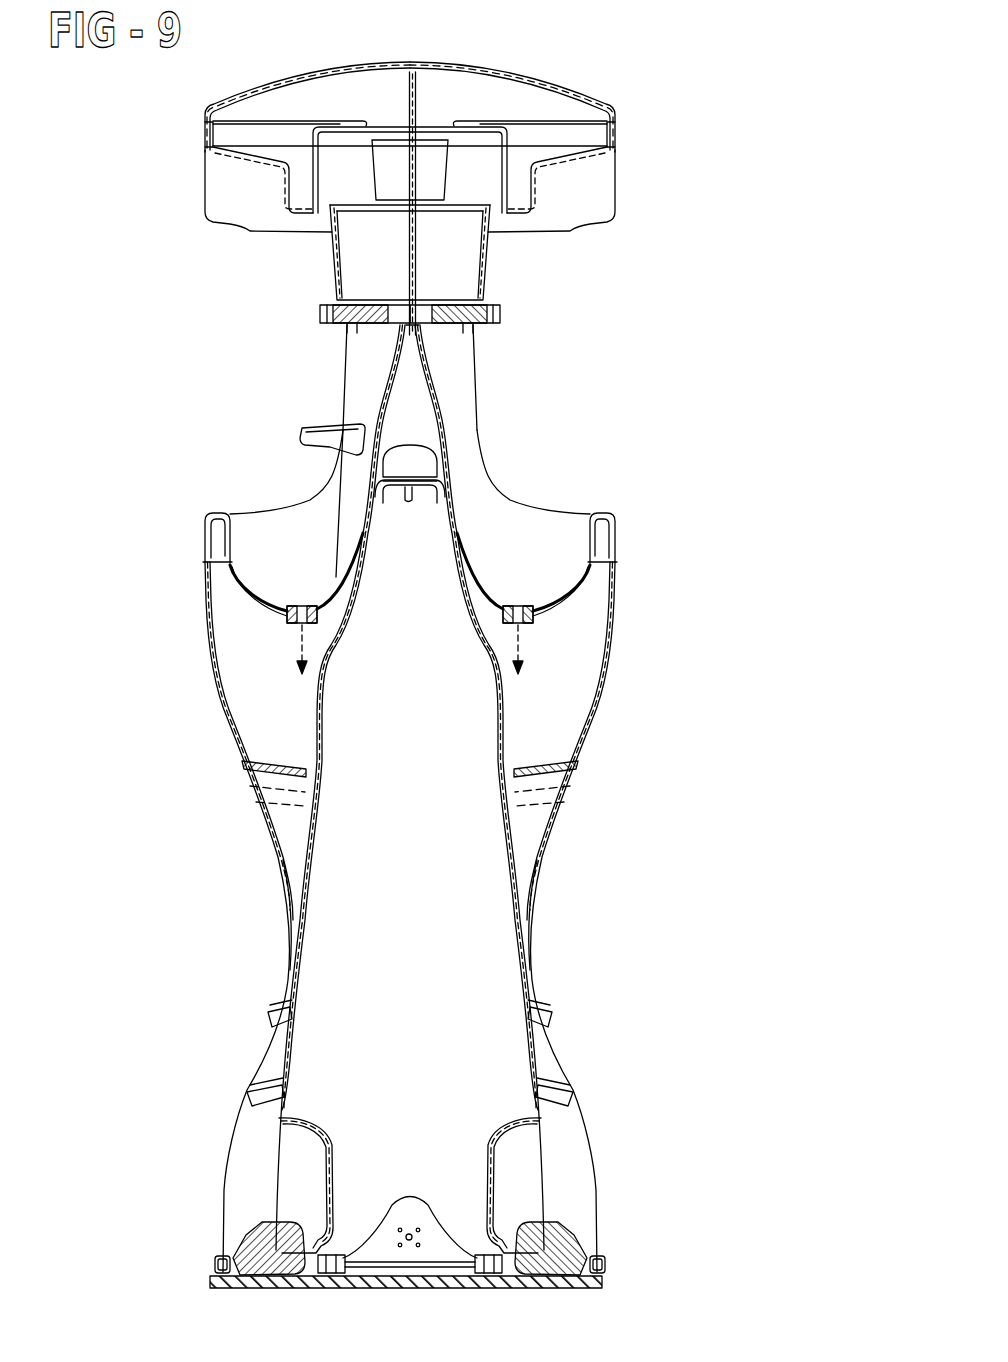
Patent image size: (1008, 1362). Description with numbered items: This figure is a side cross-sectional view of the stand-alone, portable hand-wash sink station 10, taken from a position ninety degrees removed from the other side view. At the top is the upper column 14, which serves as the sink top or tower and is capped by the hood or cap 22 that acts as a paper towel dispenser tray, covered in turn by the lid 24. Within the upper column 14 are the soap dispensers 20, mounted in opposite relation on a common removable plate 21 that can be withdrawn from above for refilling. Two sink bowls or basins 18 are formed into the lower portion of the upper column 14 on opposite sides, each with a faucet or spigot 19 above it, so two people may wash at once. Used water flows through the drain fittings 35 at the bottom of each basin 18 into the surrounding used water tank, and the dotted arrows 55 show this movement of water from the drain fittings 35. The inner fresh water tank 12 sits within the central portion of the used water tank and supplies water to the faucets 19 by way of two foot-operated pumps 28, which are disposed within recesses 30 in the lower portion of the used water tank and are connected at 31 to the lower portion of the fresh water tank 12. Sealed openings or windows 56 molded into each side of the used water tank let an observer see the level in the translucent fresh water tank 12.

The hand-wash sink station 10 is at (612, 89).
The fresh water tank 12 is at (508, 880).
The upper column 14 is at (476, 403).
The sink bowls or basins 18 is at (238, 572).
The faucets or spigots 19 is at (302, 437).
The soap dispensers 20 is at (332, 250).
The removable plate 21 is at (417, 94).
The hood or cap 22 is at (616, 190).
The lid 24 is at (272, 84).
The foot-operated pumps 28 is at (258, 1226).
The recesses 30 is at (253, 1157).
The connection of pumps to fresh water tank 31 is at (409, 1197).
The drain fittings 35 is at (300, 630).
The dotted arrows 55 is at (300, 638).
The sealed openings or windows 56 is at (280, 1022).